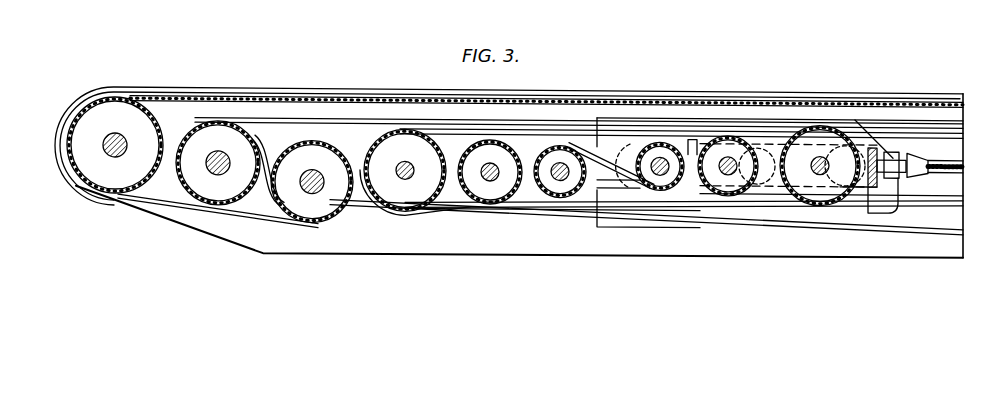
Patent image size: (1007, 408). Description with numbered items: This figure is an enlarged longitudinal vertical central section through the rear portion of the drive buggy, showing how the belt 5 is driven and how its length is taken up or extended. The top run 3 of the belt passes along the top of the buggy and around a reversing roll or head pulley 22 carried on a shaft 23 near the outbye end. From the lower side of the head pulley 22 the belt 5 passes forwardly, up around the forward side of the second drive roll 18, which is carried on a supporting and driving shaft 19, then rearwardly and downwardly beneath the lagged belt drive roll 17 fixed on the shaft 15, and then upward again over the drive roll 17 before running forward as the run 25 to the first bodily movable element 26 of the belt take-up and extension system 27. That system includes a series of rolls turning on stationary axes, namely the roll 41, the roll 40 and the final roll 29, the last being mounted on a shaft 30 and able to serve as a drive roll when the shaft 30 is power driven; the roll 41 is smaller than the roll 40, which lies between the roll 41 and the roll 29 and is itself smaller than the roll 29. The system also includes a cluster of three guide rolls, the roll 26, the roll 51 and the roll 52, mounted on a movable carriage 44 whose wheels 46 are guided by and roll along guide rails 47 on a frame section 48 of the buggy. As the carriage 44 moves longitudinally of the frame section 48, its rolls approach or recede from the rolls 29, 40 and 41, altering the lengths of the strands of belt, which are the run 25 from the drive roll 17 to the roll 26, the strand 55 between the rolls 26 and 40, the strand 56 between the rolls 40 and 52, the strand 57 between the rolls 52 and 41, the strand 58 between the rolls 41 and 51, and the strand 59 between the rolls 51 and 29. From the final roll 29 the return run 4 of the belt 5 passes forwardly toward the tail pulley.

The top run of the belt 3 is at (348, 93).
The return run of the belt 4 is at (612, 216).
The belt 5 is at (137, 84).
The shaft 15 is at (214, 176).
The belt drive roll 17 is at (226, 205).
The second drive roll 18 is at (341, 218).
The supporting and driving shaft 19 is at (305, 194).
The reversing roll or head pulley 22 is at (80, 172).
The shaft 23 is at (108, 140).
The belt run 25 is at (266, 116).
The first bodily movable element 26 is at (802, 202).
The belt take-up and extension system 27 is at (574, 112).
The final roll 29 is at (396, 202).
The shaft 30 is at (409, 178).
The roll 40 is at (489, 202).
The roll 41 is at (555, 195).
The movable carriage 44 is at (860, 214).
The wheels 46 is at (693, 140).
The guide rails 47 is at (942, 189).
The frame section 48 is at (922, 201).
The roll 51 is at (733, 194).
The roll 52 is at (657, 187).
The belt strand 55 is at (517, 204).
The belt strand 56 is at (538, 138).
The belt strand 57 is at (605, 158).
The belt strand 58 is at (583, 200).
The belt strand 59 is at (444, 125).